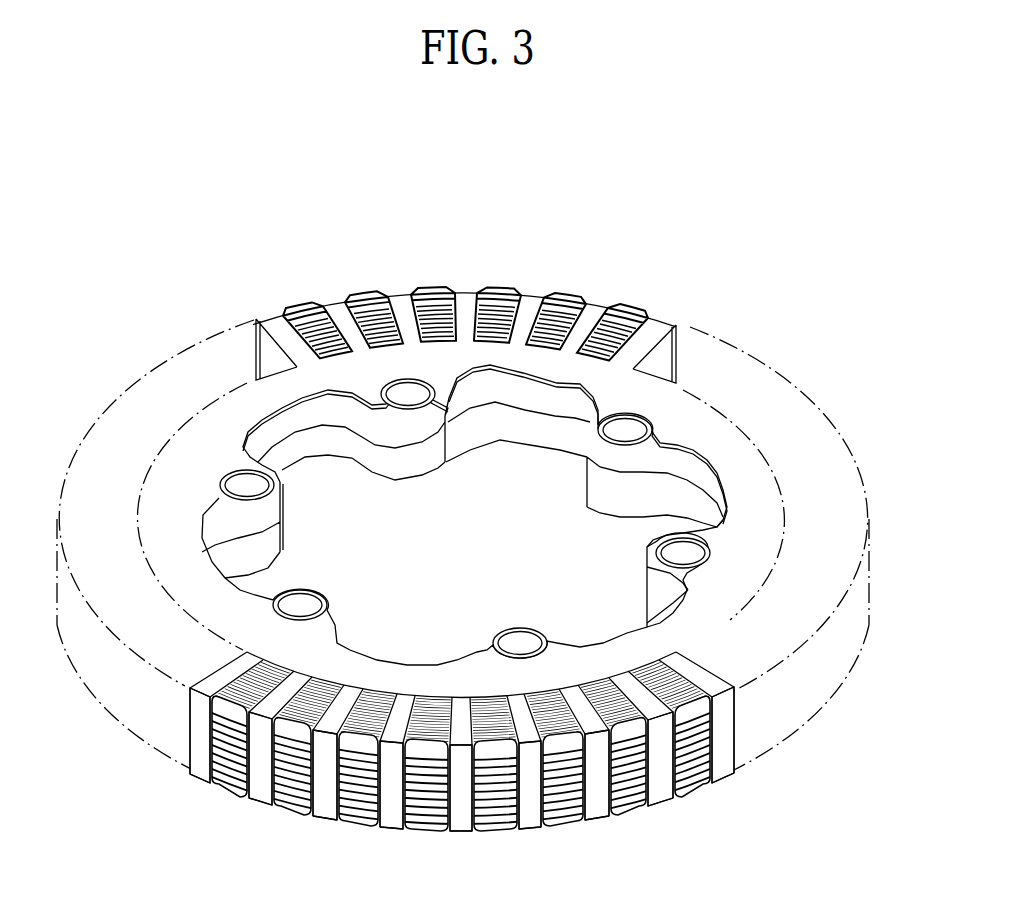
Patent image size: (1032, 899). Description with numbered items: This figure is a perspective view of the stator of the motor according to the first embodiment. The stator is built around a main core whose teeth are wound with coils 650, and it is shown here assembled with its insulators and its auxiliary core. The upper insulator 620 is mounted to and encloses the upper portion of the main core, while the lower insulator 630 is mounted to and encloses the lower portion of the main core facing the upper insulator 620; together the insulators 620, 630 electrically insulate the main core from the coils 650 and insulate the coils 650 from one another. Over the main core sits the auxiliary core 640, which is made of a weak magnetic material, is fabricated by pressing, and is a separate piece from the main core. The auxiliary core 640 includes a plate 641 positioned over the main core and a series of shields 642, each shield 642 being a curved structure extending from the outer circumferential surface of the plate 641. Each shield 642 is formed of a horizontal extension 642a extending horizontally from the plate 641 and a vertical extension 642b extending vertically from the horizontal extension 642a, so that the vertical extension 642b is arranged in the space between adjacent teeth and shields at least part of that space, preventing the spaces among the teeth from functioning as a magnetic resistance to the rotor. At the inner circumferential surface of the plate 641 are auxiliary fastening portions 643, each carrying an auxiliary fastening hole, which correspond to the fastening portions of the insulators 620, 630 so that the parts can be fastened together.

The upper insulator 620 is at (304, 425).
The lower insulator 630 is at (396, 461).
The auxiliary core 640 is at (697, 417).
The plate 641 is at (551, 360).
The shield 642 is at (887, 778).
The horizontal extension 642a is at (714, 697).
The vertical extension 642b is at (722, 748).
The auxiliary fastening portion 643 is at (511, 628).
The coil 650 is at (428, 667).